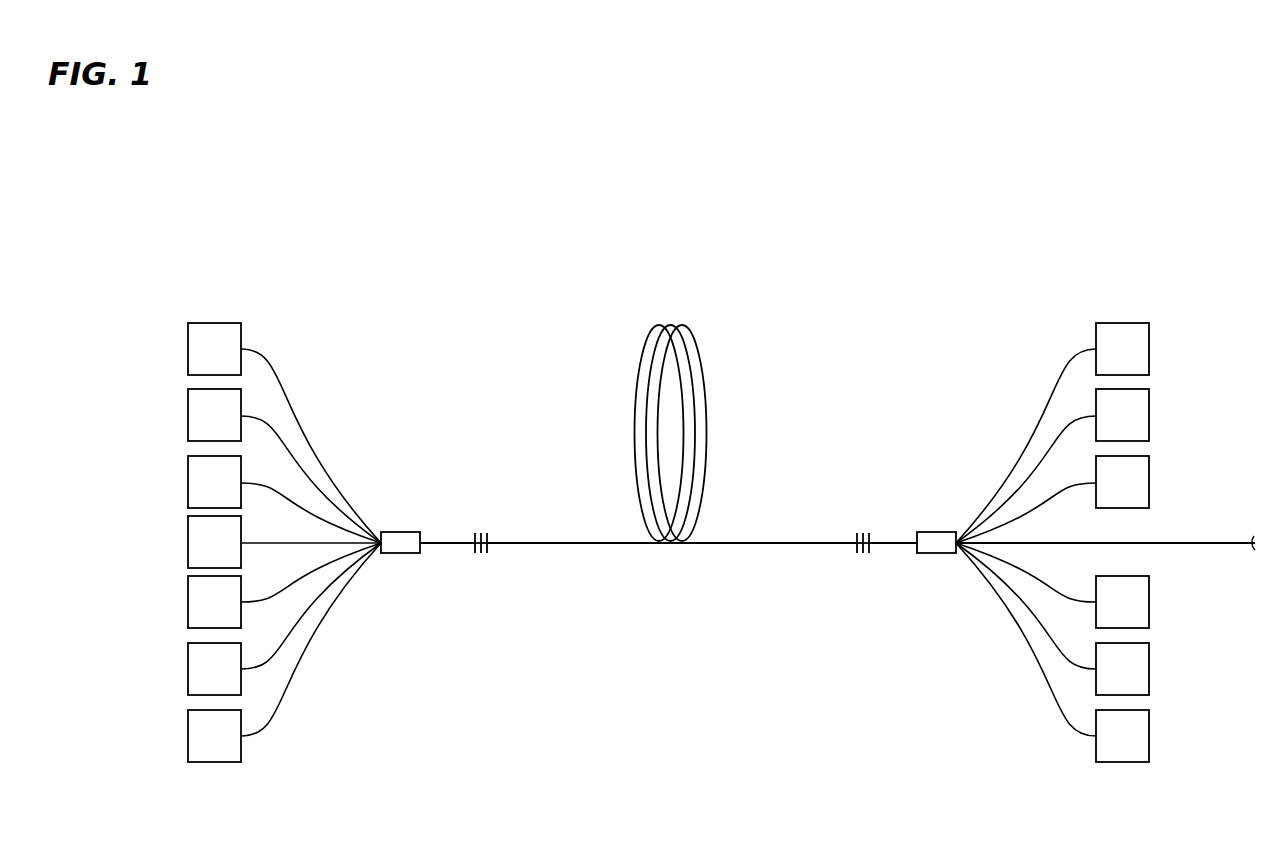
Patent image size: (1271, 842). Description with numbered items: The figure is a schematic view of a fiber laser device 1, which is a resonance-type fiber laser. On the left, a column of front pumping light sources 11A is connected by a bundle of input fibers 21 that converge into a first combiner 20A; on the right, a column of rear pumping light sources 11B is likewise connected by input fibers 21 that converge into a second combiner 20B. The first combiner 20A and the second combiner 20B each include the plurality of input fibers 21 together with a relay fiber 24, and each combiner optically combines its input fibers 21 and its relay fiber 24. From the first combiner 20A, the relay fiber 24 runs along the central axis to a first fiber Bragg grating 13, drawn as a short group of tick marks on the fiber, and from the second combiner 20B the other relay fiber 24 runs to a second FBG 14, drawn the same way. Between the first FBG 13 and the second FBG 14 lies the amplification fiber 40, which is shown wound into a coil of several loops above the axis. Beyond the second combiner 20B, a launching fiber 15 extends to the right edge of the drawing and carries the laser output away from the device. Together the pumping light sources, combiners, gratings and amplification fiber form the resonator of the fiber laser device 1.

The fiber laser device 1 is at (322, 249).
The front pumping light sources 11A is at (205, 323).
The rear pumping light sources 11B is at (1132, 323).
The input fibers 21 is at (281, 385).
The first combiner 20A is at (400, 513).
The second combiner 20B is at (932, 563).
The relay fiber 24 is at (449, 543).
The first fiber Bragg grating 13 is at (481, 530).
The second fiber Bragg grating 14 is at (862, 556).
The amplification fiber 40 is at (590, 544).
The launching fiber 15 is at (1187, 543).